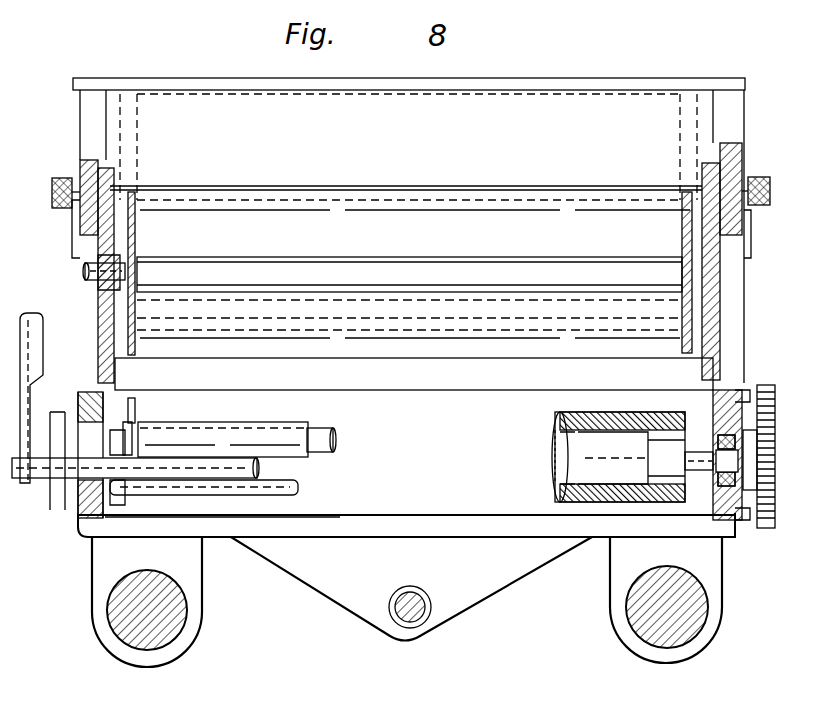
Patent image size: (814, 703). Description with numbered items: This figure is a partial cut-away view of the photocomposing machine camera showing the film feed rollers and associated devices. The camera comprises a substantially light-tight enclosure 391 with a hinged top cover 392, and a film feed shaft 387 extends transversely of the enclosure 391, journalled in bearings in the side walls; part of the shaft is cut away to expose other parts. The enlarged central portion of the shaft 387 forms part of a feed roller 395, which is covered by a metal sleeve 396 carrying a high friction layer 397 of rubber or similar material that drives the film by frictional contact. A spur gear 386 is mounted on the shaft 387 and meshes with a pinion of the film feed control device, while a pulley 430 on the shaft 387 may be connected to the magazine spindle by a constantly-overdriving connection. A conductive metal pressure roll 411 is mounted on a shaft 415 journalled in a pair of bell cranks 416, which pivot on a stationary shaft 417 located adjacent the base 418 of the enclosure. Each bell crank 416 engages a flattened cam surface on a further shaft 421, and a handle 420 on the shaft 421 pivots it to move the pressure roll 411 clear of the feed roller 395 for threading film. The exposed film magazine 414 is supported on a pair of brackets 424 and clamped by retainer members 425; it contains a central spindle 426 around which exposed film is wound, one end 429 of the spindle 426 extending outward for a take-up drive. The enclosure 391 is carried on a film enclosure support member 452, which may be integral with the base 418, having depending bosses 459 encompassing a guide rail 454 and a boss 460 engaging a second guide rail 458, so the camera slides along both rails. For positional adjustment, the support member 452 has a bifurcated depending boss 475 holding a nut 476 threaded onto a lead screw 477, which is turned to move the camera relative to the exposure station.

The spur gear 386 is at (765, 532).
The film feed shaft 387 is at (700, 452).
The light-tight enclosure 391 is at (182, 519).
The hinged top cover 392 is at (581, 79).
The feed roller 395 is at (622, 476).
The metal sleeve 396 is at (631, 458).
The high friction layer 397 is at (630, 426).
The pressure roll 411 is at (270, 438).
The exposed film magazine 414 is at (177, 143).
The shaft 415 is at (322, 430).
The bell crank 416 is at (136, 410).
The stationary shaft 417 is at (278, 493).
The base 418 is at (218, 524).
The handle 420 is at (32, 325).
The shaft 421 is at (152, 480).
The bracket 424 is at (72, 228).
The retainer member 425 is at (62, 178).
The central spindle 426 is at (524, 262).
The spindle end 429 is at (87, 272).
The pulley 430 is at (56, 505).
The film enclosure support member 452 is at (462, 590).
The guide rail 454 is at (690, 640).
The second guide rail 458 is at (152, 642).
The depending boss 459 is at (712, 618).
The boss 460 is at (190, 636).
The bifurcated depending boss 475 is at (336, 598).
The nut 476 is at (412, 622).
The lead screw 477 is at (421, 596).